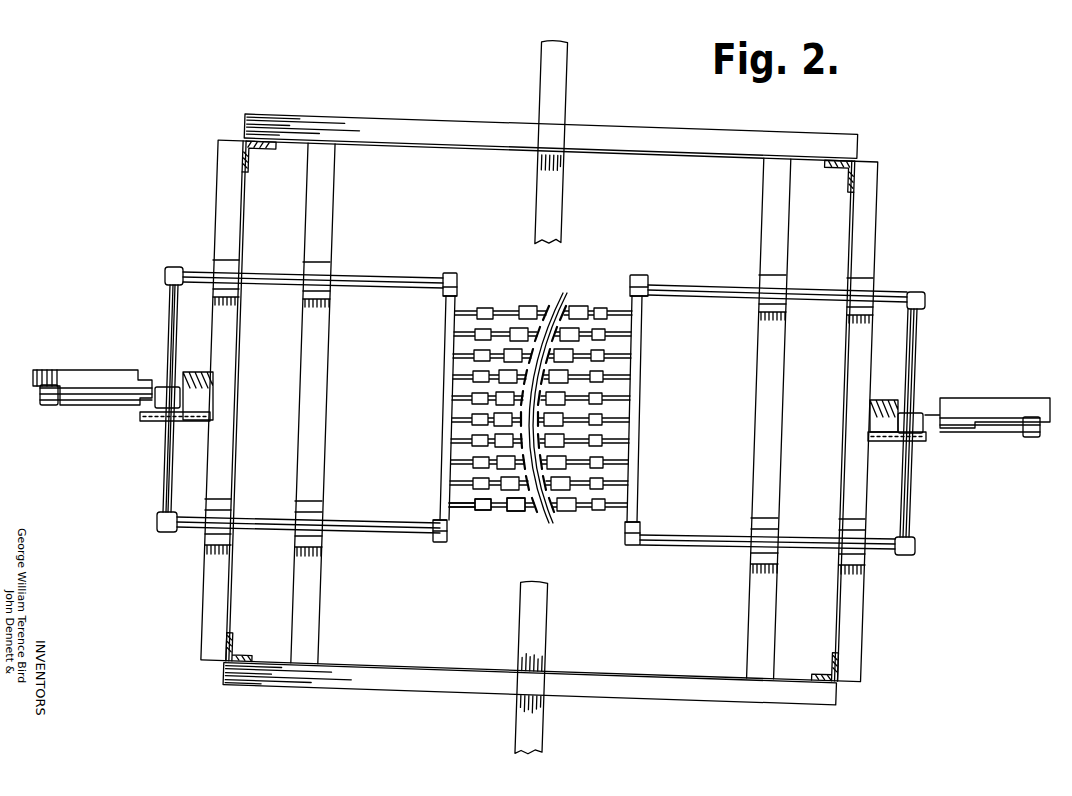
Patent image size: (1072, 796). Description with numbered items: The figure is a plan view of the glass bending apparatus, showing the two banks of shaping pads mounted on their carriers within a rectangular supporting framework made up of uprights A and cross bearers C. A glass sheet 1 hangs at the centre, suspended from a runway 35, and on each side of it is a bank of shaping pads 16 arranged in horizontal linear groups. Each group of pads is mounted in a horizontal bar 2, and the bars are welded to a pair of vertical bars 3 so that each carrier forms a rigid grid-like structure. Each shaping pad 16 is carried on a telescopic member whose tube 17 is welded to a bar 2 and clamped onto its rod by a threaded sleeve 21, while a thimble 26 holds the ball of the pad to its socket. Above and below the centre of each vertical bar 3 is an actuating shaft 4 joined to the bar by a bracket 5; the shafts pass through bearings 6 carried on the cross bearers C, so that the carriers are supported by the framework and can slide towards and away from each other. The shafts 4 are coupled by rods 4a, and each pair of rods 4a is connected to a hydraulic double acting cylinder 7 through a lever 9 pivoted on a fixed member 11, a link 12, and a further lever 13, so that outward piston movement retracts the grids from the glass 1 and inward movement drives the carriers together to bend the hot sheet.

The glass sheet 1 is at (563, 291).
The horizontal bar 2 is at (446, 368).
The vertical bar 3 is at (444, 296).
The actuating shaft 4 is at (198, 271).
The rod 4a is at (933, 339).
The bracket 5 is at (447, 276).
The bearing 6 is at (236, 275).
The double acting cylinder 7 is at (190, 421).
The lever 9 is at (155, 388).
The fixed member 11 is at (107, 371).
The link 12 is at (78, 388).
The lever 13 is at (42, 392).
The shaping pad 16 is at (568, 313).
The tube 17 is at (458, 509).
The sleeve 21 is at (480, 512).
The thimble 26 is at (518, 512).
The runway 35 is at (562, 193).
The upright A is at (268, 152).
The cross bearer C is at (214, 204).